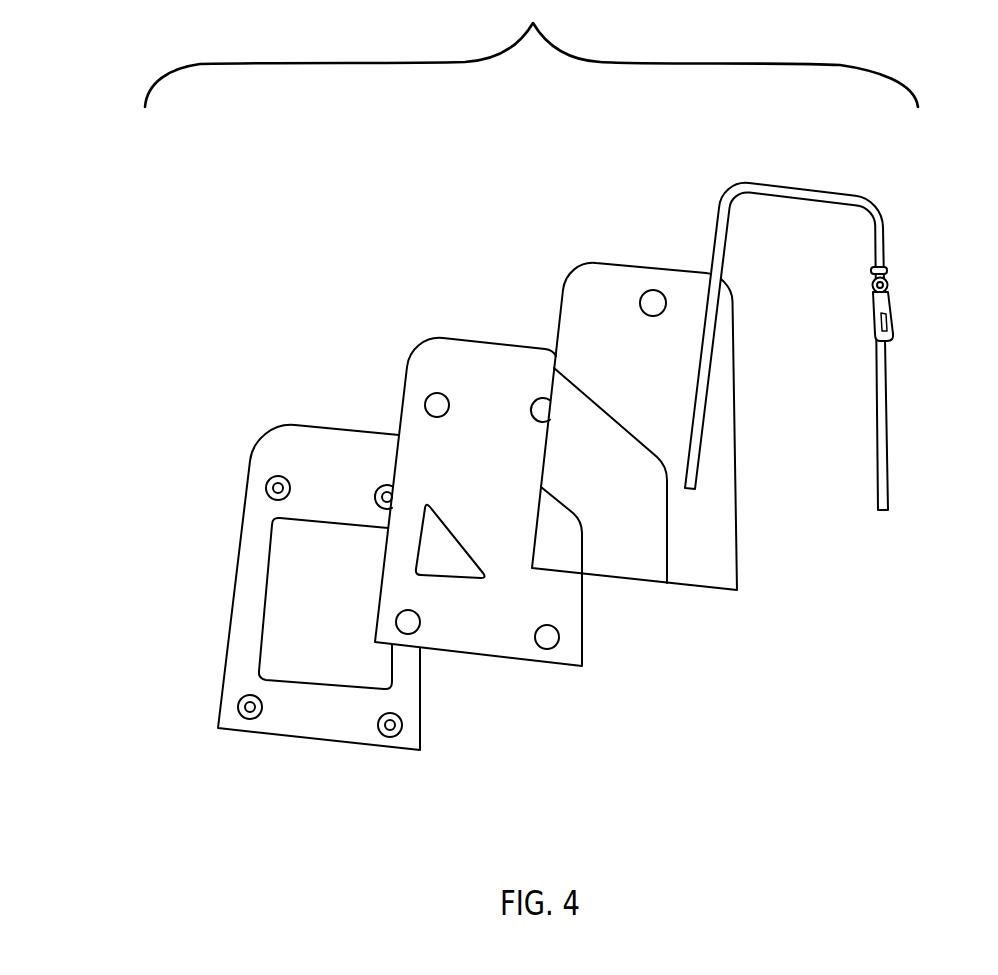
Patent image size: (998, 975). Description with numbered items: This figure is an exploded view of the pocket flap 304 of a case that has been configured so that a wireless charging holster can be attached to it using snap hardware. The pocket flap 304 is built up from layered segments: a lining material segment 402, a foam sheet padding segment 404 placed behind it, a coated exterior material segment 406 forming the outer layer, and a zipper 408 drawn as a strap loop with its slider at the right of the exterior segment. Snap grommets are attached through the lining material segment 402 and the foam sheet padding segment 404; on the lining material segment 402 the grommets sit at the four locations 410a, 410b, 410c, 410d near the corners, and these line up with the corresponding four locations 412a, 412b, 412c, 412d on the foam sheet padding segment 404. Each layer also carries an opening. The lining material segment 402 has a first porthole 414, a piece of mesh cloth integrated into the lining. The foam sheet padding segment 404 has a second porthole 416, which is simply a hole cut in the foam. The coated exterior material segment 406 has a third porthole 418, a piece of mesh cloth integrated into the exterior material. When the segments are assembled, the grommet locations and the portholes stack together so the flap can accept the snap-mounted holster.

The pocket flap 304 is at (531, 53).
The lining material segment 402 is at (327, 463).
The foam sheet padding segment 404 is at (525, 372).
The coated exterior material segment 406 is at (613, 264).
The zipper 408 is at (893, 327).
The snap grommet location 410a is at (266, 477).
The snap grommet location 410b is at (250, 720).
The snap grommet location 410c is at (390, 738).
The snap grommet location 410d is at (387, 483).
The snap grommet location 412a is at (429, 393).
The snap grommet location 412b is at (409, 636).
The snap grommet location 412c is at (547, 651).
The snap grommet location 412d is at (543, 396).
The first porthole 414 is at (292, 597).
The second porthole 416 is at (447, 553).
The third porthole 418 is at (619, 522).